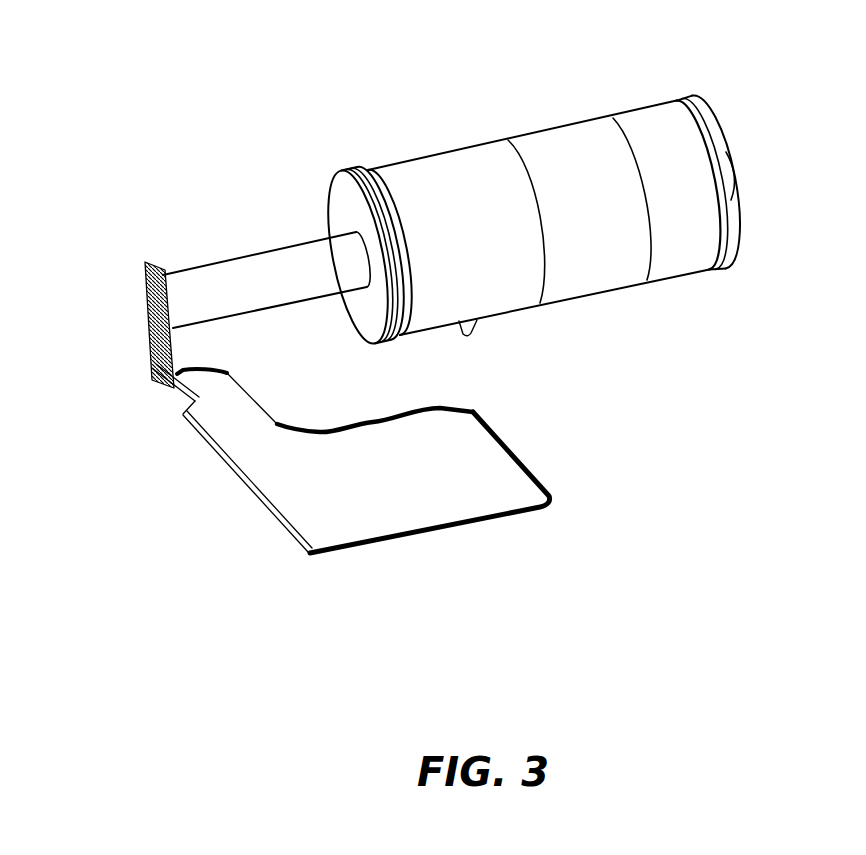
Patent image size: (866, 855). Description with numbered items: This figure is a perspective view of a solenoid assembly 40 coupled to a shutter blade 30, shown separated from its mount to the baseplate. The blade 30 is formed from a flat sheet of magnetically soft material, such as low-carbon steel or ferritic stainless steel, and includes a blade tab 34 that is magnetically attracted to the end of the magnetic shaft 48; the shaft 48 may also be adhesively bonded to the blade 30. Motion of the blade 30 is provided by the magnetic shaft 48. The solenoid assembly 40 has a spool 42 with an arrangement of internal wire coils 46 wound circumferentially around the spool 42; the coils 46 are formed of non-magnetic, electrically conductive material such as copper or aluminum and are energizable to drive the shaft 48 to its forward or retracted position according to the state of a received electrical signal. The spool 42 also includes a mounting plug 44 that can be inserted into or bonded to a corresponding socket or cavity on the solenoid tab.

The blade 30 is at (225, 465).
The blade tab 34 is at (140, 292).
The solenoid assembly 40 is at (378, 58).
The spool 42 is at (349, 169).
The mounting plug 44 is at (732, 170).
The wire coils 46 is at (678, 270).
The magnetic shaft 48 is at (305, 240).